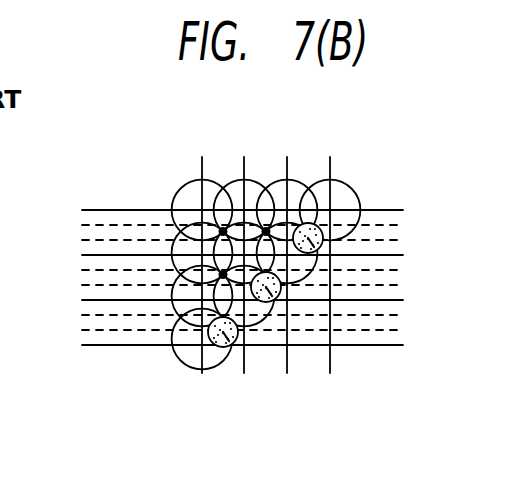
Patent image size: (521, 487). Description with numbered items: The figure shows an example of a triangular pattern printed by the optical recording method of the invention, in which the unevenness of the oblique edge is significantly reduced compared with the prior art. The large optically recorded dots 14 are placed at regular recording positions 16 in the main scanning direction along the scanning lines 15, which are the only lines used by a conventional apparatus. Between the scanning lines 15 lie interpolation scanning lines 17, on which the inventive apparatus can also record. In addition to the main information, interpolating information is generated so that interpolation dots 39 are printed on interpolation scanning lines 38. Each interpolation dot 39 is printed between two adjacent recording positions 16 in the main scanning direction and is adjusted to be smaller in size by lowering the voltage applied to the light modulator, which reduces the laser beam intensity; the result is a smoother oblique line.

The optically recorded dots 14 is at (213, 371).
The scanning lines 15 is at (82, 344).
The recording pitches in the main scanning direction 16 is at (242, 158).
The interpolation scanning lines 17 is at (81, 284).
The interpolation scanning lines 38 is at (405, 327).
The interpolation dots 39 is at (310, 252).